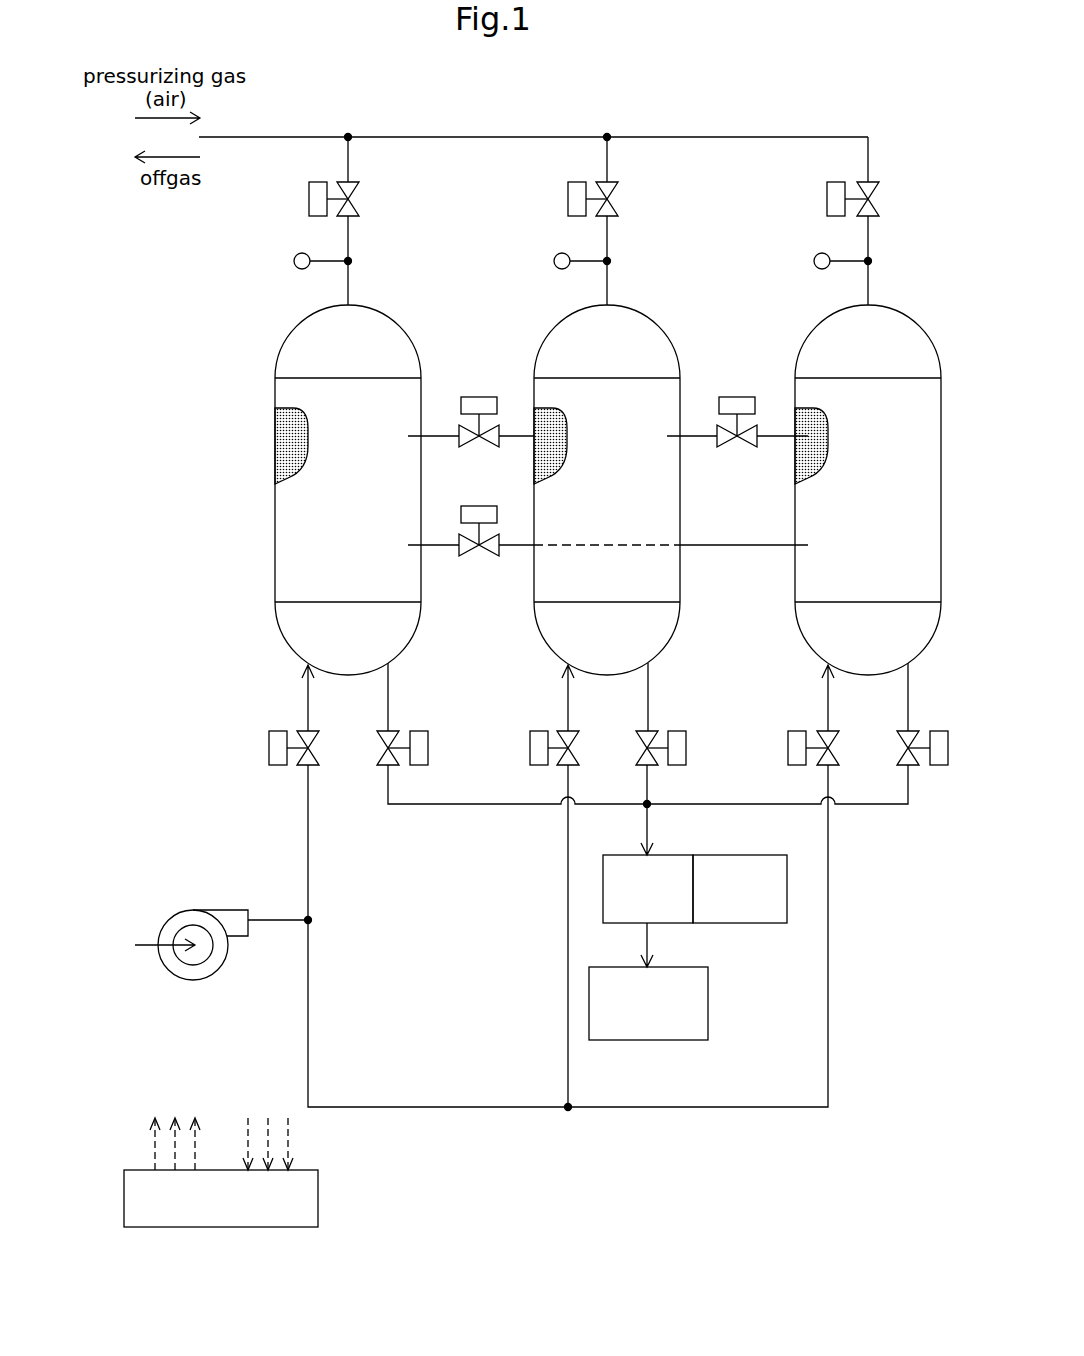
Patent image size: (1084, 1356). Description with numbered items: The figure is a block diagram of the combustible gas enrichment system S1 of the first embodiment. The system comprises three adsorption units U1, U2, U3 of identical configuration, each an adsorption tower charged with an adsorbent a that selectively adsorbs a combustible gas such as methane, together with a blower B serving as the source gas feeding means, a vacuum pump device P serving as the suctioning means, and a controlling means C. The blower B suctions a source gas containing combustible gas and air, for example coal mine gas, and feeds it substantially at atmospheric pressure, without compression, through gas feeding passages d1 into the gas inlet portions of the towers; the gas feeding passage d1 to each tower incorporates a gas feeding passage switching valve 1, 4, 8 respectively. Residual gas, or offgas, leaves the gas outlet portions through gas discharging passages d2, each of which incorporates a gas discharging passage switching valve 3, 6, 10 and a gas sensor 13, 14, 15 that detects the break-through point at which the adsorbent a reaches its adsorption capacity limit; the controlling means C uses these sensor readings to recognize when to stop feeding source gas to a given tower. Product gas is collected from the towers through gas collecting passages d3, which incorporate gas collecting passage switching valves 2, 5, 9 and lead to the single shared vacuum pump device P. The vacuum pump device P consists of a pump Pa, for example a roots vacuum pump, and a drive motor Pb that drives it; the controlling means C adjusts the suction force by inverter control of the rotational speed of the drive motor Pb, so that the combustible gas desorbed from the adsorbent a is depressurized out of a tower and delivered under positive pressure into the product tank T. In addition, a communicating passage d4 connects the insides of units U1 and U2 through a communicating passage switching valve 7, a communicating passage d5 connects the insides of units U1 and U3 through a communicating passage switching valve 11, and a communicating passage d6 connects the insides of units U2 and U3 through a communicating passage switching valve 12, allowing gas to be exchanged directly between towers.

The gas feeding passage switching valve 1 is at (269, 748).
The gas collecting passage switching valve 2 is at (388, 768).
The gas discharging passage switching valve 3 is at (309, 199).
The gas feeding passage switching valve 4 is at (530, 750).
The gas collecting passage switching valve 5 is at (688, 750).
The gas discharging passage switching valve 6 is at (568, 199).
The communicating passage switching valve 7 is at (482, 397).
The gas feeding passage switching valve 8 is at (788, 748).
The gas collecting passage switching valve 9 is at (939, 767).
The gas discharging passage switching valve 10 is at (827, 200).
The communicating passage switching valve 11 is at (491, 554).
The communicating passage switching valve 12 is at (737, 397).
The gas sensor 13 is at (294, 261).
The gas sensor 14 is at (554, 260).
The gas sensor 15 is at (814, 260).
The gas feeding passage d1 is at (308, 826).
The gas discharging passage d2 is at (313, 137).
The gas collecting passage d3 is at (648, 690).
The communicating passage d4 is at (435, 436).
The communicating passage d5 is at (436, 552).
The communicating passage d6 is at (690, 440).
The adsorbent a is at (275, 440).
The adsorption unit U1 is at (259, 378).
The adsorption unit U2 is at (542, 668).
The adsorption unit U3 is at (787, 333).
The blower B is at (200, 910).
The vacuum pump device P is at (741, 896).
The pump Pa is at (670, 923).
The drive motor Pb is at (787, 880).
The product tank T is at (648, 1040).
The controlling means C is at (218, 1227).
The enrichment system S1 is at (812, 1137).